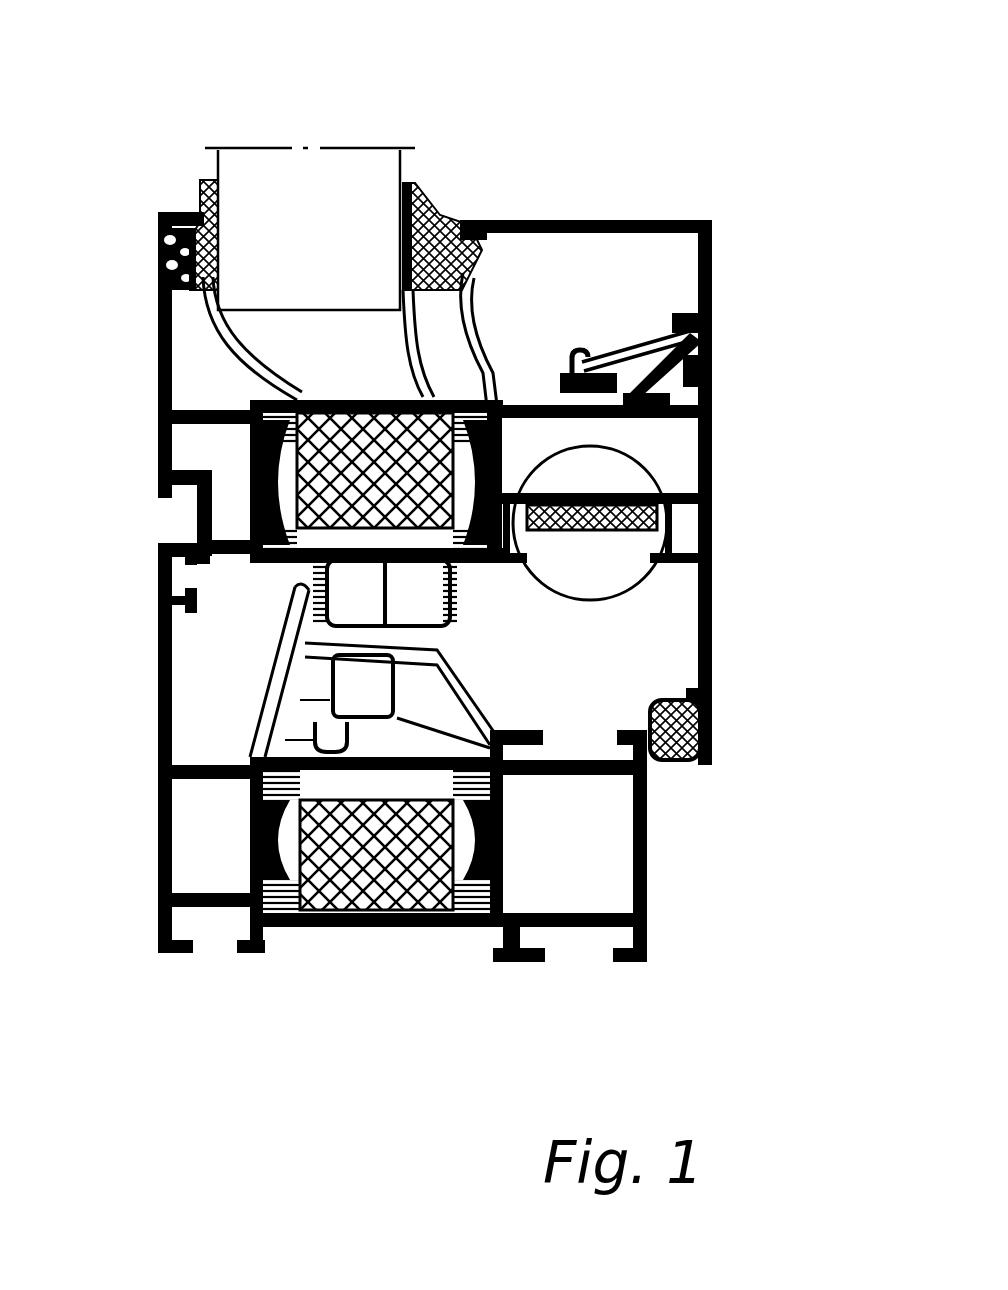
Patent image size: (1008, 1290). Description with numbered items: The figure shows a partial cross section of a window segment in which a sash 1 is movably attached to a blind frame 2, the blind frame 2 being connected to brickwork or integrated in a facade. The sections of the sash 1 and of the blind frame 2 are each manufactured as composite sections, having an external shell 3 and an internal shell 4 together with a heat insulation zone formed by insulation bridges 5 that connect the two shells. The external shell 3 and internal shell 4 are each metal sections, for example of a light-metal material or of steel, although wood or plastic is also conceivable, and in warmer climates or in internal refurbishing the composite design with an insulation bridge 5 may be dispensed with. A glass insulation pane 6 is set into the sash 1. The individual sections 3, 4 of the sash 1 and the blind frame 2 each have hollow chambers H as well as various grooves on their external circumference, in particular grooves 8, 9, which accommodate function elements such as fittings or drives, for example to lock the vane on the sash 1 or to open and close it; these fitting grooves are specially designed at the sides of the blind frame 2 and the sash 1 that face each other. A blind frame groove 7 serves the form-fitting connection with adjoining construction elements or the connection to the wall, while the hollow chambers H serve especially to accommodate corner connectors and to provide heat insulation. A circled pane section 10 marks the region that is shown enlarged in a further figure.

The sash 1 is at (557, 118).
The blind frame 2 is at (307, 968).
The external shell 3 is at (158, 352).
The internal shell 4 is at (713, 255).
The insulation bridge 5 is at (407, 927).
The glass insulation pane 6 is at (274, 165).
The blind frame groove 7 is at (568, 938).
The groove 8 is at (575, 748).
The groove 9 is at (600, 547).
The pane section 10 is at (652, 463).
The hollow chamber H is at (677, 440).